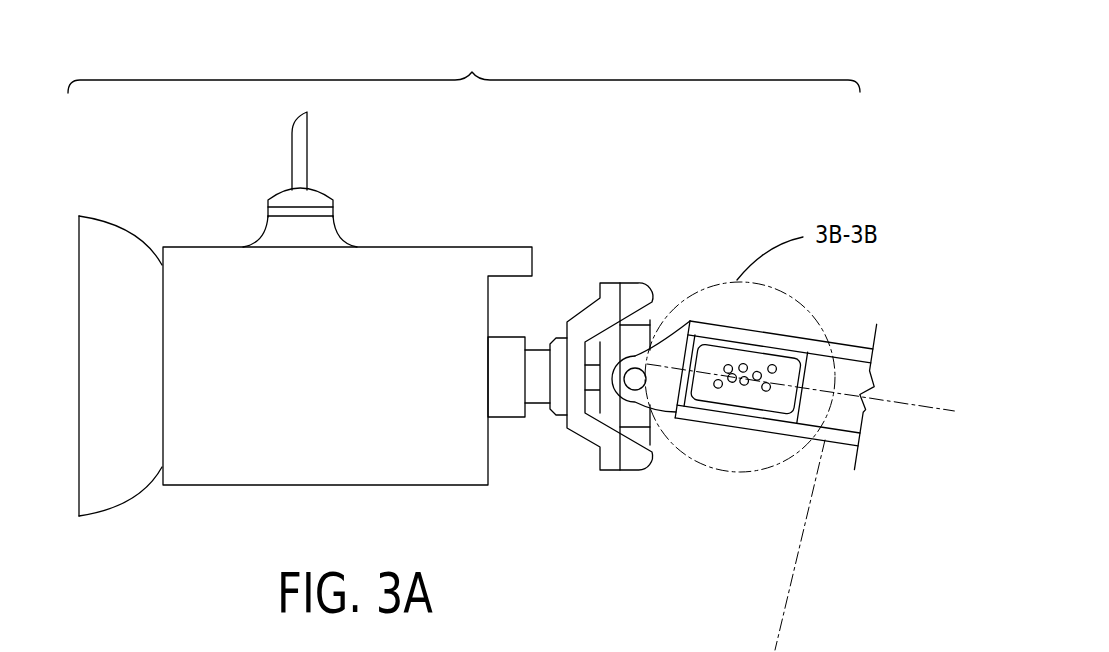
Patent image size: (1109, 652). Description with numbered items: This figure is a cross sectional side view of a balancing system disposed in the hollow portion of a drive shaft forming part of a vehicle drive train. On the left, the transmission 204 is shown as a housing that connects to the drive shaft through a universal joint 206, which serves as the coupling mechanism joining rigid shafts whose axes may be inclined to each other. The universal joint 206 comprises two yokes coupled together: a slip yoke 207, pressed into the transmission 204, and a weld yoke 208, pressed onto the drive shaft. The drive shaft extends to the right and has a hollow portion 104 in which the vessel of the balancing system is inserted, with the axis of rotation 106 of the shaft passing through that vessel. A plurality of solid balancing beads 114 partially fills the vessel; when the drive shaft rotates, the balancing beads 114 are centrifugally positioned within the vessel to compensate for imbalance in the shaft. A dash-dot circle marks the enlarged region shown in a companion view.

The transmission 204 is at (405, 245).
The slip yoke 207 is at (572, 322).
The coupling mechanism / universal joint 206 is at (607, 280).
The weld yoke 208 is at (673, 323).
The hollow portion 104 is at (850, 377).
The axis of rotation 106 is at (890, 400).
The balancing beads 114 is at (730, 382).